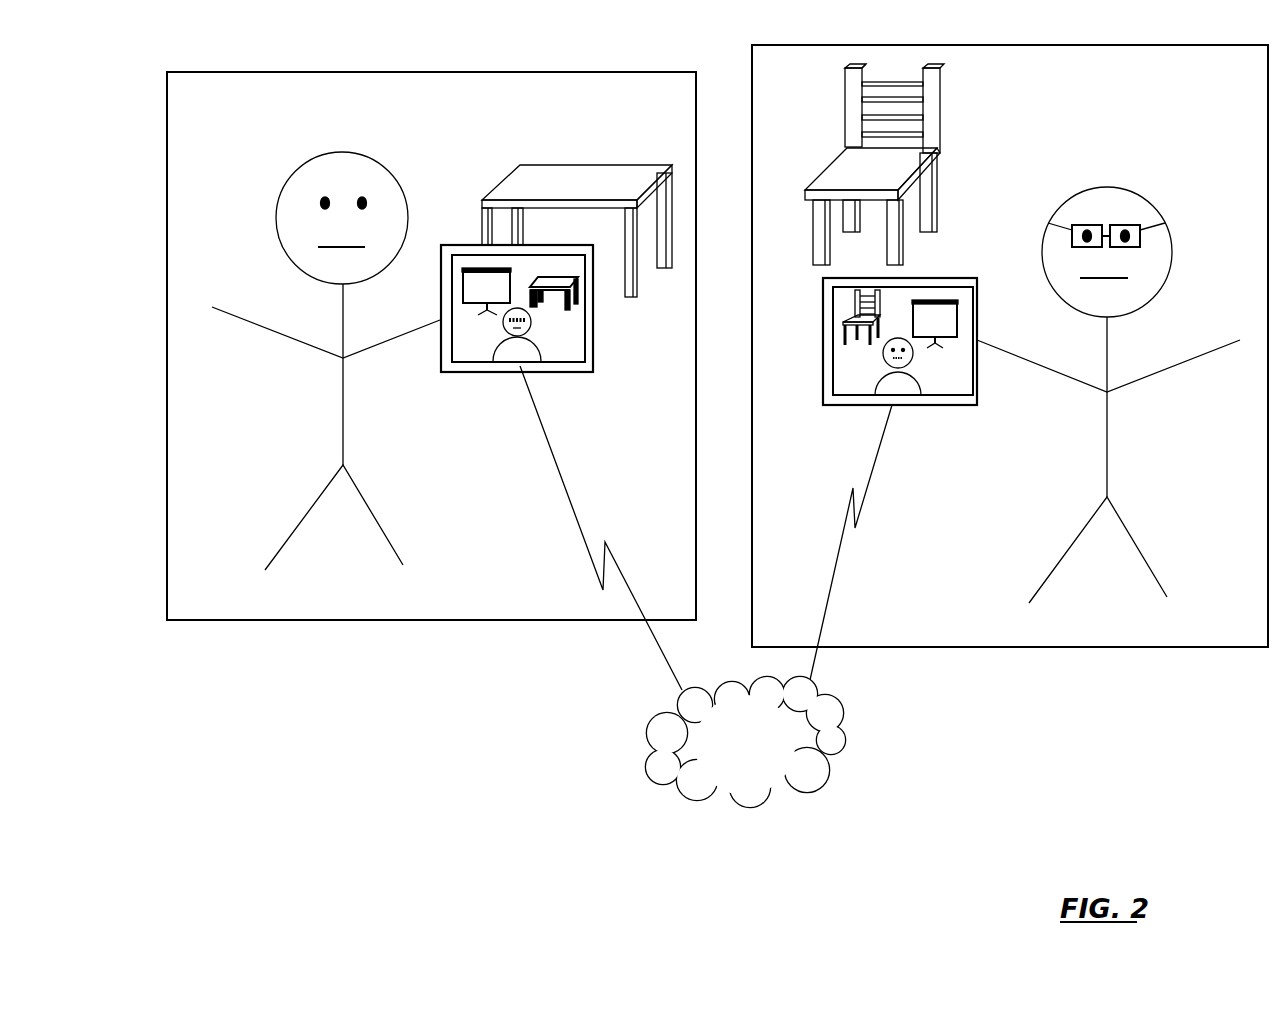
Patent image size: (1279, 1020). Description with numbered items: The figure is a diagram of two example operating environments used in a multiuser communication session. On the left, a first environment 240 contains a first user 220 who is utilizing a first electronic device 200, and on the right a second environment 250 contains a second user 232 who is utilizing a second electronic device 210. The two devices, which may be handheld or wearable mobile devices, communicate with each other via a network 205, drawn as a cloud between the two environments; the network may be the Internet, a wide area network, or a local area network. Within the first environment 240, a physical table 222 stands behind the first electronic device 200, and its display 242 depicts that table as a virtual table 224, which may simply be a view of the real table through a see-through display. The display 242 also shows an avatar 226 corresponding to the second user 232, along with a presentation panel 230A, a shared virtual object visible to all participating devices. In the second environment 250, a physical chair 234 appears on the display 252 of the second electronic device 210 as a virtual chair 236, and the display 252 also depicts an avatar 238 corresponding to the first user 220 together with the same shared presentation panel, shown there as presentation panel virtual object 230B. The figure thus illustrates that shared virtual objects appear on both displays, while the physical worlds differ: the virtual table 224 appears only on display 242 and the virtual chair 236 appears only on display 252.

The first electronic device 200 is at (526, 314).
The network 205 is at (731, 768).
The second electronic device 210 is at (899, 353).
The first user 220 is at (295, 172).
The physical table 222 is at (520, 165).
The virtual table 224 is at (578, 290).
The avatar 226 is at (530, 322).
The presentation panel 230A is at (488, 267).
The presentation panel virtual object 230B is at (935, 300).
The second user 232 is at (1148, 199).
The physical chair 234 is at (940, 110).
The virtual chair 236 is at (857, 313).
The avatar 238 is at (920, 382).
The first environment 240 is at (428, 71).
The display 242 is at (473, 340).
The second environment 250 is at (1010, 45).
The display 252 is at (858, 373).